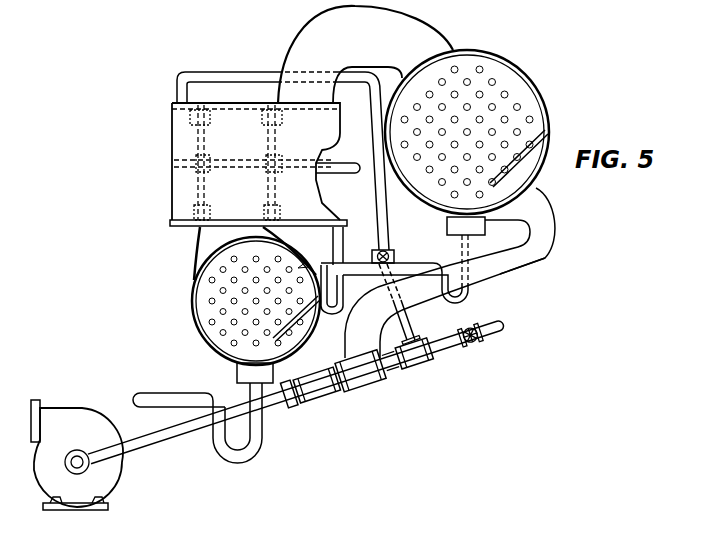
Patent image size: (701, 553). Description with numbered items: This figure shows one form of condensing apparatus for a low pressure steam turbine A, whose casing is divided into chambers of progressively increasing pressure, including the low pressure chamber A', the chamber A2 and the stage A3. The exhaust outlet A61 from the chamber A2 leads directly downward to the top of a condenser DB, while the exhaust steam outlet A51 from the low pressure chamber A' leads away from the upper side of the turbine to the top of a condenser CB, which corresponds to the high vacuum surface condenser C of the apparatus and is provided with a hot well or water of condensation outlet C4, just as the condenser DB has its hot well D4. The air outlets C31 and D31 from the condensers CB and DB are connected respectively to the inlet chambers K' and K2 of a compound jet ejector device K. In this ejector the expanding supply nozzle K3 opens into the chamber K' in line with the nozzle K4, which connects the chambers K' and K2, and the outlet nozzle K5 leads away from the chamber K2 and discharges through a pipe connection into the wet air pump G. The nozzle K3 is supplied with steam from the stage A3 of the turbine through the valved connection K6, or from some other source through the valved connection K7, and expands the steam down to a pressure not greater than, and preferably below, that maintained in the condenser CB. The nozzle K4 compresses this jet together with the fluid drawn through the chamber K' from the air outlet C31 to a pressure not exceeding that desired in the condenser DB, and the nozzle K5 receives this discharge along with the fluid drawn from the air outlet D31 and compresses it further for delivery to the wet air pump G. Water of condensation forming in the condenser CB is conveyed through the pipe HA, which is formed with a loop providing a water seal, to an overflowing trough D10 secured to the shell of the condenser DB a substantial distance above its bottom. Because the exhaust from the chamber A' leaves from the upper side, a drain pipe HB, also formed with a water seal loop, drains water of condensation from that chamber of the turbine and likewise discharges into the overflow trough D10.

The low pressure steam turbine A is at (258, 164).
The low pressure chamber A' is at (359, 120).
The turbine chamber A2 is at (221, 112).
The turbine stage A3 is at (175, 118).
The exhaust steam outlet A51 is at (323, 32).
The exhaust outlet A61 is at (200, 237).
The condenser CB is at (514, 71).
The surface condenser C is at (459, 273).
The hot well C4 is at (485, 228).
The air outlet C31 is at (505, 263).
The pipe HA is at (413, 265).
The drain pipe HB is at (343, 238).
The overflowing trough D10 is at (301, 268).
The air outlet D31 is at (334, 304).
The condenser DB is at (192, 301).
The hot well D4 is at (237, 372).
The compound jet ejector device K is at (360, 382).
The inlet chamber K' is at (405, 369).
The inlet chamber K2 is at (323, 408).
The expanding supply nozzle K3 is at (369, 331).
The nozzle K4 is at (335, 396).
The outlet nozzle K5 is at (288, 404).
The valved connection K6 is at (381, 214).
The valved connection K7 is at (457, 345).
The wet air pump G is at (77, 455).